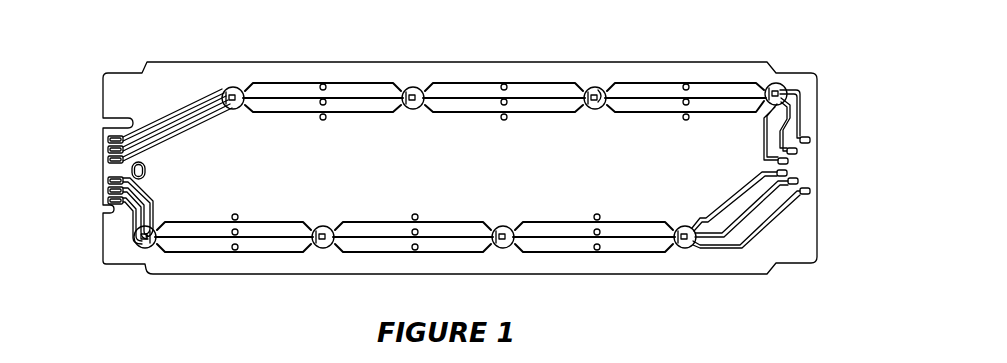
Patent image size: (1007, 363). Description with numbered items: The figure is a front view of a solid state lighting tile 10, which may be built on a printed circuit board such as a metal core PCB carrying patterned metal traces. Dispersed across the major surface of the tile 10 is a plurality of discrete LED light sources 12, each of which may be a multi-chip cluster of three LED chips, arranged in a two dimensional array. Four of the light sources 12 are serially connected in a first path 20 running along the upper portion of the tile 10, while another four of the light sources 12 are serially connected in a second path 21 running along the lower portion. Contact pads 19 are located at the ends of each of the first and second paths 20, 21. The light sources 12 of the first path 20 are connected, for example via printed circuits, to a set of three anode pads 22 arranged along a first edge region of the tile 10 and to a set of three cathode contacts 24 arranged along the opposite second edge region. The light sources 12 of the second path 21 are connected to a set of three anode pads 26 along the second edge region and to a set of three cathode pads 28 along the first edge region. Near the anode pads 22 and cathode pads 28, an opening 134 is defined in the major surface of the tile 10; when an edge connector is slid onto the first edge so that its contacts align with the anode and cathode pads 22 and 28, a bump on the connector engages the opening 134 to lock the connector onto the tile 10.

The solid state lighting tile 10 is at (478, 62).
The LED light source 12 is at (600, 90).
The contact pad 19 is at (118, 137).
The first path 20 is at (305, 82).
The second path 21 is at (645, 254).
The anode pads 22 is at (96, 163).
The cathode contacts 24 is at (820, 163).
The anode pads 26 is at (828, 200).
The cathode pads 28 is at (92, 208).
The opening 134 is at (143, 176).